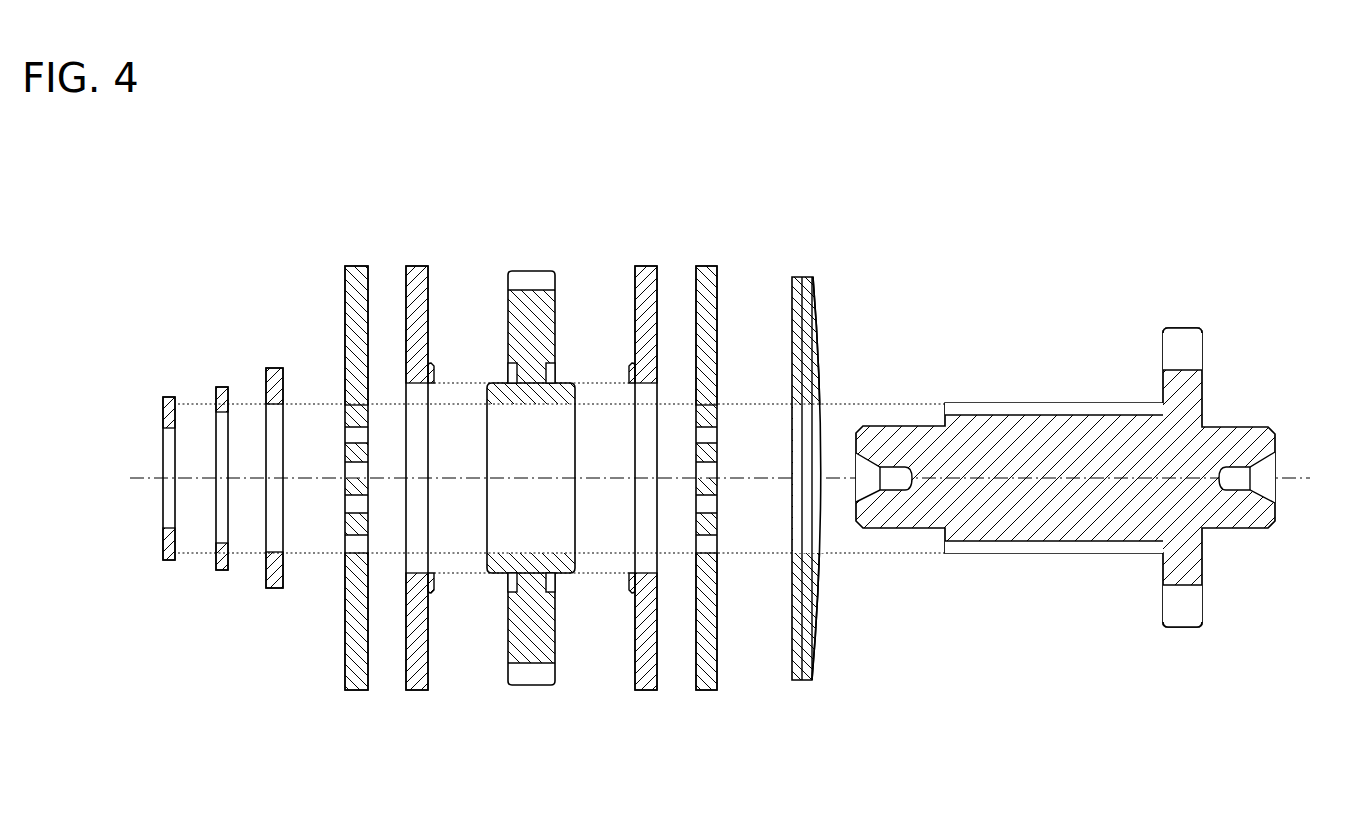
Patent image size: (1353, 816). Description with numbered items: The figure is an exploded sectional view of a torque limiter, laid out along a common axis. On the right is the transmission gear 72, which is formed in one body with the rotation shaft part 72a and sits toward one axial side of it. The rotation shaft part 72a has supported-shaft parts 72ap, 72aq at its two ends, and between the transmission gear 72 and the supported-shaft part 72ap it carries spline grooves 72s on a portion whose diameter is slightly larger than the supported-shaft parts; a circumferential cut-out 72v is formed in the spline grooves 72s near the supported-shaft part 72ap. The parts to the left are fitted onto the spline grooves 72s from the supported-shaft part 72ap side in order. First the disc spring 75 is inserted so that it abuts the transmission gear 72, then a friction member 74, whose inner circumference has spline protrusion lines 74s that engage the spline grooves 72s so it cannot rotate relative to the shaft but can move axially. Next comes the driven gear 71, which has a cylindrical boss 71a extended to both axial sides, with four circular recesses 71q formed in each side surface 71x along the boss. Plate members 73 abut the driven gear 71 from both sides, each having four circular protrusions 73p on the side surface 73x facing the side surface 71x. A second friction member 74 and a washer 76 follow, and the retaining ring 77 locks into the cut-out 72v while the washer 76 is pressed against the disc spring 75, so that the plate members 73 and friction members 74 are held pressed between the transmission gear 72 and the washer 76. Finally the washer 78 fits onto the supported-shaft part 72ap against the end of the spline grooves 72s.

The driven gear 71 is at (531, 271).
The cylindrical boss 71a is at (560, 372).
The circular recesses 71q is at (505, 371).
The side surfaces 71x is at (510, 628).
The transmission gear 72 is at (1065, 449).
The rotation shaft part 72a is at (1074, 425).
The supported-shaft part 72ap is at (900, 530).
The supported-shaft part 72aq is at (1238, 530).
The spline grooves 72s is at (1063, 553).
The cut-out 72v is at (978, 402).
The plate members 73 is at (418, 266).
The circular protrusions 73p is at (433, 370).
The side surface 73x is at (429, 283).
The friction member 74 is at (356, 266).
The spline protrusion lines 74s is at (355, 500).
The disc spring 75 is at (803, 277).
The washer 76 is at (272, 368).
The retaining ring 77 is at (221, 387).
The washer 78 is at (169, 397).